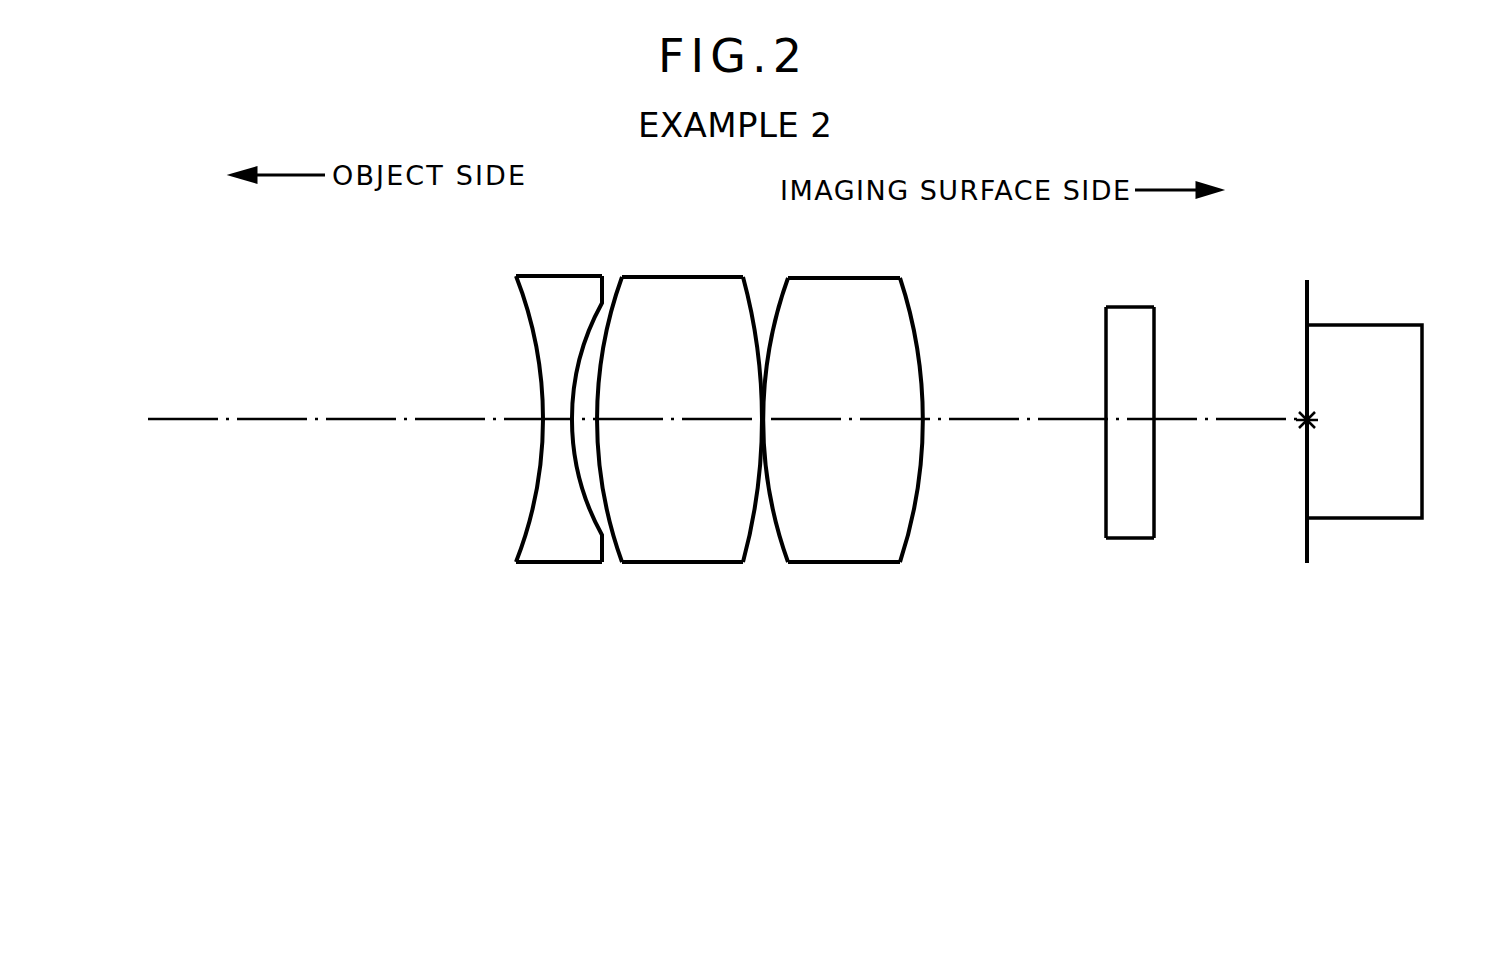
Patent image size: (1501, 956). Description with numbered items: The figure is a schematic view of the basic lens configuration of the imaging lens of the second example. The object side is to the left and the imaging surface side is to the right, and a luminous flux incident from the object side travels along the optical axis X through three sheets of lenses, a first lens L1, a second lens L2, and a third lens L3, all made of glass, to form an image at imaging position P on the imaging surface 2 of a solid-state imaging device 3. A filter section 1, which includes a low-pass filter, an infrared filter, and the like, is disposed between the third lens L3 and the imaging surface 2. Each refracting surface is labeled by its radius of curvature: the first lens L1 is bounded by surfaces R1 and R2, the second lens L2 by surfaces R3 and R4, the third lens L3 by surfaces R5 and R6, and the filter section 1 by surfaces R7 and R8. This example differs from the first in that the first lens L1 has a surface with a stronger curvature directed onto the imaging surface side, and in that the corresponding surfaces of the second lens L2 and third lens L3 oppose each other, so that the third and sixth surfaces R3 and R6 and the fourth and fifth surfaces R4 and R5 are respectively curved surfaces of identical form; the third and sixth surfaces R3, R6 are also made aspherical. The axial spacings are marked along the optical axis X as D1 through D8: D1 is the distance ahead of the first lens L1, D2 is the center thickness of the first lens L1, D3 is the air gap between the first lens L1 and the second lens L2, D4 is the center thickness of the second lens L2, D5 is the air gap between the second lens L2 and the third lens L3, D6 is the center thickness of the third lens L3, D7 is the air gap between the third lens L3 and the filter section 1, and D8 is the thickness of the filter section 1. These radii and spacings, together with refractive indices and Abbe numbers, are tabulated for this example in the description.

The optical axis X is at (273, 420).
The first lens L1 is at (543, 419).
The second lens L2 is at (679, 417).
The third lens L3 is at (866, 417).
The radius of curvature of first surface R1 is at (525, 301).
The radius of curvature of second surface R2 is at (594, 328).
The radius of curvature of third surface R3 is at (606, 352).
The radius of curvature of fourth surface R4 is at (748, 290).
The radius of curvature of fifth surface R5 is at (784, 298).
The radius of curvature of sixth surface R6 is at (915, 308).
The radius of curvature of seventh surface R7 is at (1105, 328).
The radius of curvature of eighth surface R8 is at (1157, 328).
The first axial distance D1 is at (387, 419).
The center thickness of first lens D2 is at (546, 417).
The air gap between first and second lenses D3 is at (587, 418).
The center thickness of second lens D4 is at (672, 419).
The air gap between second and third lenses D5 is at (762, 419).
The center thickness of third lens D6 is at (855, 419).
The air gap between third lens and filter section D7 is at (1008, 419).
The center thickness of filter section D8 is at (1123, 419).
The filter section 1 is at (1139, 429).
The imaging surface 2 is at (1307, 331).
The solid-state imaging device 3 is at (1412, 349).
The imaging position P is at (1313, 421).